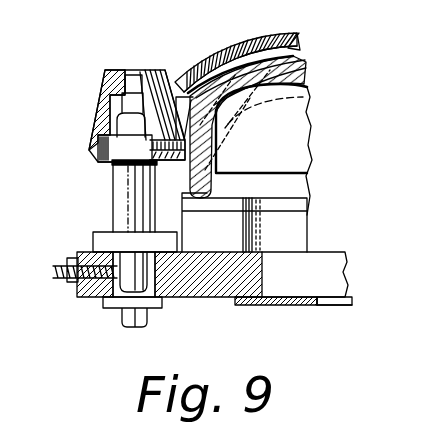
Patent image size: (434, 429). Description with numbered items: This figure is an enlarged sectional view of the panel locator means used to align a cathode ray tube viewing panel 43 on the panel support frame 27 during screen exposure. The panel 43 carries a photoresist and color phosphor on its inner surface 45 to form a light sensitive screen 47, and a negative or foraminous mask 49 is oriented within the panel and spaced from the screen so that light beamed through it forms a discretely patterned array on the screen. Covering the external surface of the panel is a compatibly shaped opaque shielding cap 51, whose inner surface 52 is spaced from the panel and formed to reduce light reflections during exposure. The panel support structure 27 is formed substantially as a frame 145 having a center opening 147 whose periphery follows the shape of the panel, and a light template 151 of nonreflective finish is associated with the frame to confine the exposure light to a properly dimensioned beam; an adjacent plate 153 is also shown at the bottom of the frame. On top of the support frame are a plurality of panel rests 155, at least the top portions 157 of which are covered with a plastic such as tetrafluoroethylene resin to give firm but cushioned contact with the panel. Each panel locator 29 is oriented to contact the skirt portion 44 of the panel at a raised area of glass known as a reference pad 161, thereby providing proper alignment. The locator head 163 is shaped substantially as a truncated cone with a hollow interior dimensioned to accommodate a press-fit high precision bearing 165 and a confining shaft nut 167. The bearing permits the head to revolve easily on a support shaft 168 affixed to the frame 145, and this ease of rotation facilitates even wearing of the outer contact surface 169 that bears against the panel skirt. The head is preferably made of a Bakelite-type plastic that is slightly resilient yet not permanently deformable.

The panel support frame 27 is at (208, 318).
The panel locator 29 is at (84, 70).
The cathode ray tube viewing panel 43 is at (279, 62).
The skirt portion 44 is at (213, 159).
The inner surface 45 is at (283, 72).
The light sensitive screen 47 is at (297, 82).
The foraminous mask 49 is at (260, 112).
The opaque shielding cap 51 is at (225, 50).
The inner surface of shielding cap 52 is at (251, 46).
The frame 145 is at (90, 292).
The center opening 147 is at (320, 277).
The light template 151 is at (298, 306).
The bottom plate 153 is at (328, 304).
The panel rest 155 is at (319, 213).
The top portion of panel rest 157 is at (256, 207).
The reference pad 161 is at (185, 164).
The locator head 163 is at (156, 82).
The high precision bearing 165 is at (112, 154).
The shaft nut 167 is at (125, 125).
The support shaft 168 is at (115, 198).
The outer contact surface 169 is at (90, 146).